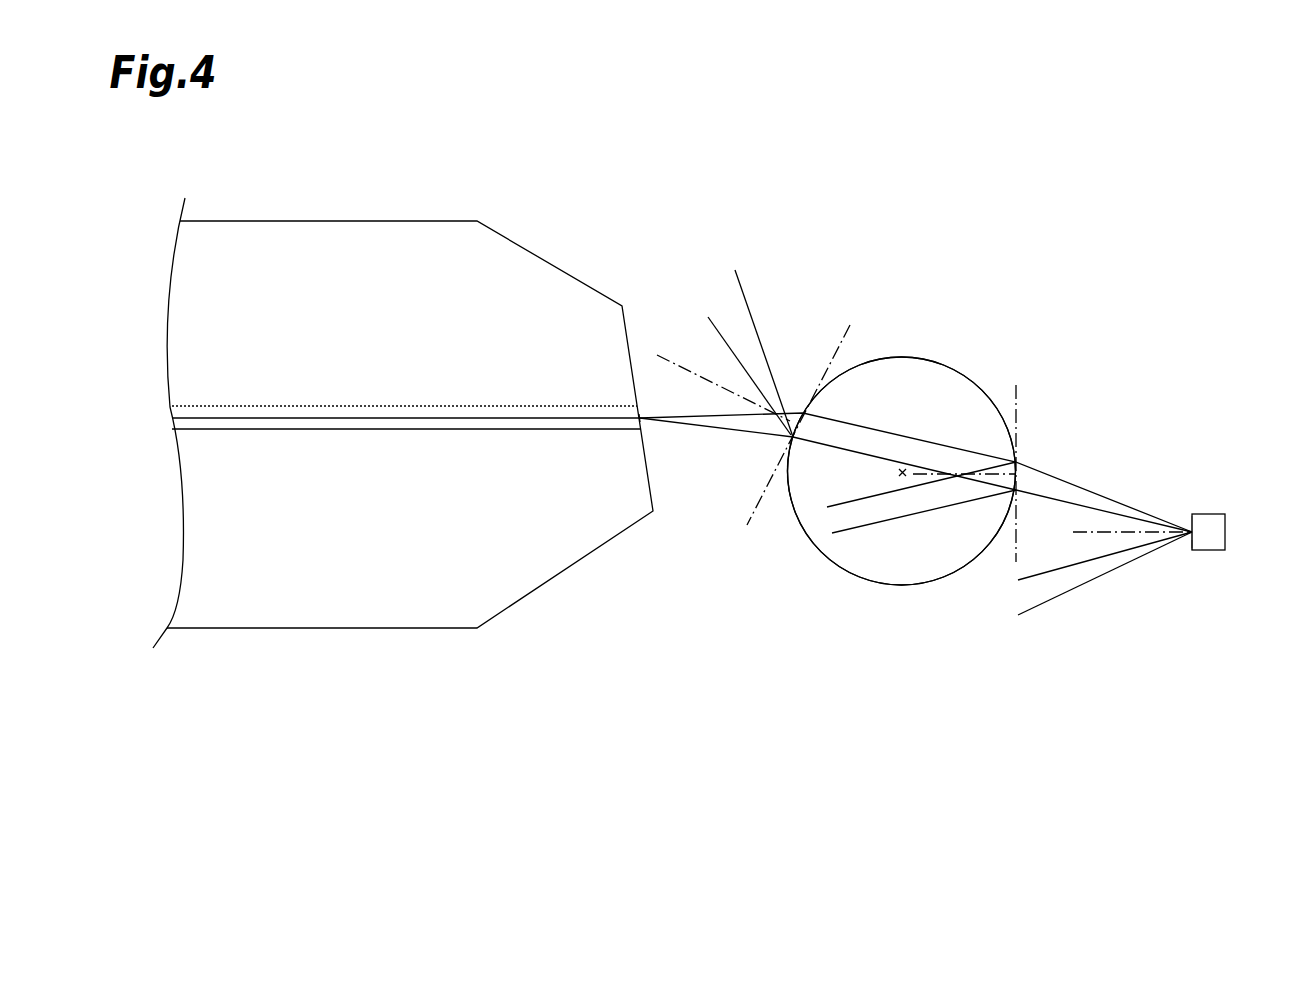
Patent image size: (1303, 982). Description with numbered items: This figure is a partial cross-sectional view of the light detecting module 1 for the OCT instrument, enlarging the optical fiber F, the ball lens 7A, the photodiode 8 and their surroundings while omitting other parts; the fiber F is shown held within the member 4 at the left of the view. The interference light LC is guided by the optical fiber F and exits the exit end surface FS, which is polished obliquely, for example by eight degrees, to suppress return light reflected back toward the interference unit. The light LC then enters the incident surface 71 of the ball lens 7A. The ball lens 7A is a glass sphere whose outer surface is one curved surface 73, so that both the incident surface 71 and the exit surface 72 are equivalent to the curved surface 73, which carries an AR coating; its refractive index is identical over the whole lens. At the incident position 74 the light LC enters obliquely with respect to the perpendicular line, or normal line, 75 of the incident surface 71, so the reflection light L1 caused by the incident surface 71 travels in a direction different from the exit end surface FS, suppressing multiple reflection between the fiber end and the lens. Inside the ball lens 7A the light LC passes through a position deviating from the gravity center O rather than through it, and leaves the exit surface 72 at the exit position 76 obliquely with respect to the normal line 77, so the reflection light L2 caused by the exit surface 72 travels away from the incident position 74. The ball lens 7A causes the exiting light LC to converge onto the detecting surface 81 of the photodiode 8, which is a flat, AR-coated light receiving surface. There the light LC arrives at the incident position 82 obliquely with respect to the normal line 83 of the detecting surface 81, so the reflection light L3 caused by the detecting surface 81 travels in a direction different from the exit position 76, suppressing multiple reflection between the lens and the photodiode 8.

The light detecting module 1 is at (1112, 232).
The optical fiber holding member (ferrule block) 4 is at (345, 221).
The optical fiber F is at (354, 420).
The exit end surface FS is at (643, 418).
The ball lens 7A is at (955, 369).
The incident surface 71 is at (791, 500).
The exit surface 72 is at (995, 537).
The curved surface 73 is at (902, 471).
The incident position 74 is at (784, 418).
The perpendicular line (normal line) of the incident surface 75 is at (677, 353).
The exit position 76 is at (1017, 490).
The perpendicular line (normal line) of the exit surface 77 is at (929, 478).
The gravity center O is at (889, 471).
The reflection light L1 is at (755, 308).
The reflection light L2 is at (872, 524).
The reflection light L3 is at (1082, 587).
The interference light LC is at (725, 430).
The photodiode 8 is at (1213, 513).
The detecting surface 81 is at (1191, 527).
The incident position 82 is at (1192, 540).
The perpendicular line (normal line) of the detecting surface 83 is at (1137, 534).